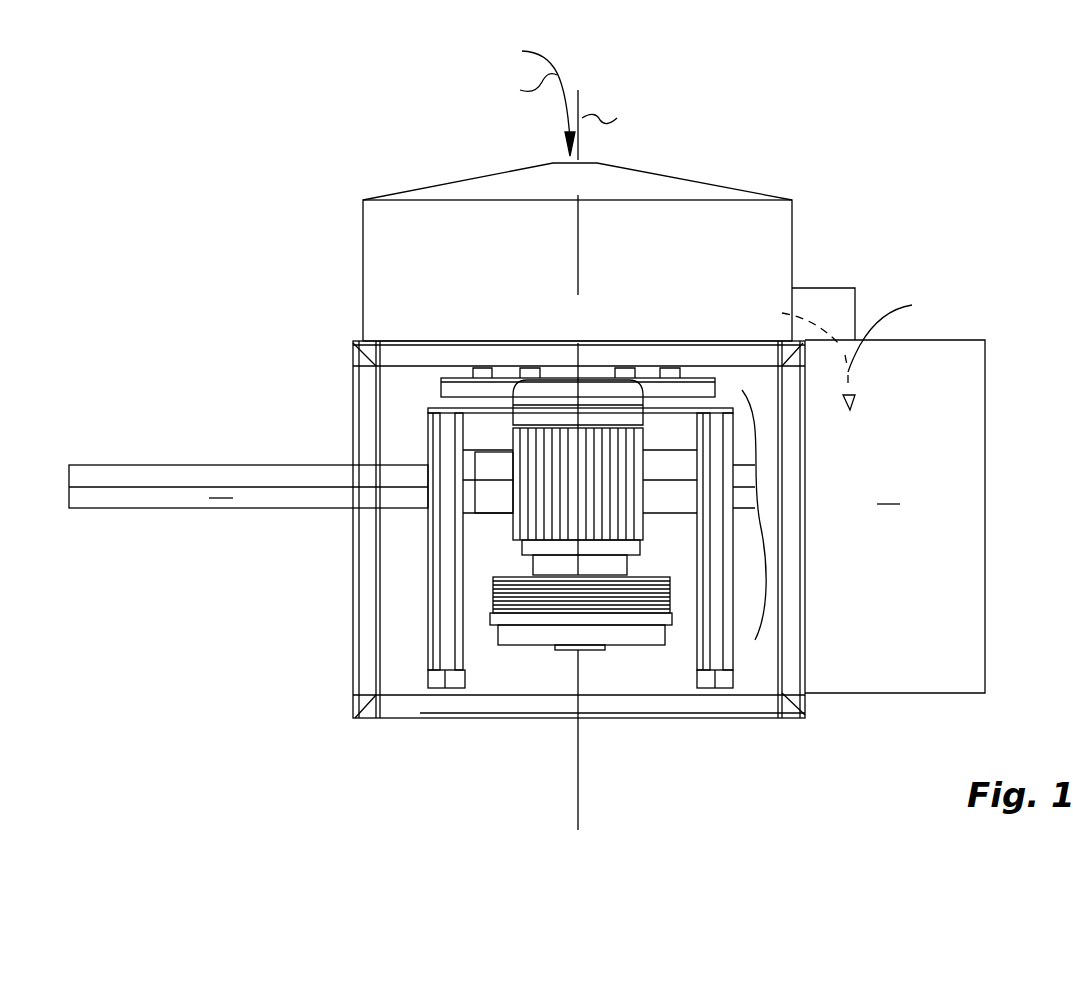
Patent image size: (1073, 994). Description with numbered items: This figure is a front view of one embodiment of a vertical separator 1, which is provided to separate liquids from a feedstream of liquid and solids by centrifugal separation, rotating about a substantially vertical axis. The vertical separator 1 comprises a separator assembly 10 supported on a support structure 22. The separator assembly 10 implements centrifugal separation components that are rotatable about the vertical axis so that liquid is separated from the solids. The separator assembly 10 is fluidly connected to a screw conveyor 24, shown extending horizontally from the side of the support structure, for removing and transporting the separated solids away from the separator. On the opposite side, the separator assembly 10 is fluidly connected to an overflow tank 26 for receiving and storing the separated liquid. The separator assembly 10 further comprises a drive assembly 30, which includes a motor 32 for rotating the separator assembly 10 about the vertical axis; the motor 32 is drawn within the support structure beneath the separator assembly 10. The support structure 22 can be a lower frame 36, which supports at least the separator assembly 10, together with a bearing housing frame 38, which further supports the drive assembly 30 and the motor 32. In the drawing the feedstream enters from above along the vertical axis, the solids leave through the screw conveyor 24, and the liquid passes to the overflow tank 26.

The vertical separator 1 is at (563, 440).
The separator assembly 10 is at (363, 276).
The support structure 22 is at (511, 529).
The screw conveyor 24 is at (130, 510).
The overflow tank 26 is at (984, 402).
The drive assembly 30 is at (760, 522).
The motor 32 is at (523, 523).
The lower frame 36 is at (353, 531).
The bearing housing frame 38 is at (722, 643).